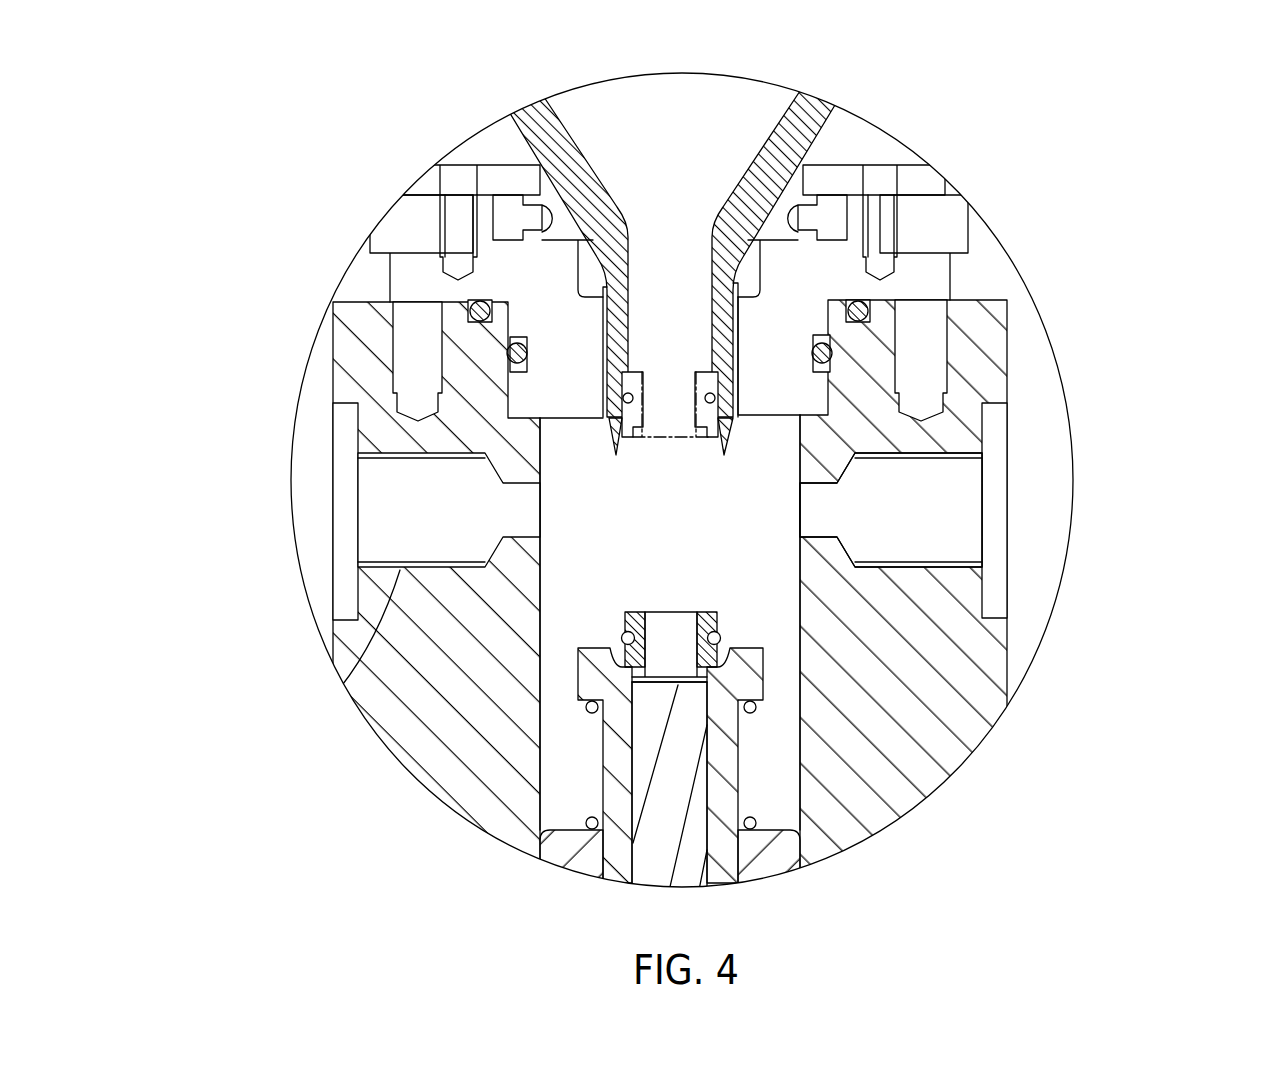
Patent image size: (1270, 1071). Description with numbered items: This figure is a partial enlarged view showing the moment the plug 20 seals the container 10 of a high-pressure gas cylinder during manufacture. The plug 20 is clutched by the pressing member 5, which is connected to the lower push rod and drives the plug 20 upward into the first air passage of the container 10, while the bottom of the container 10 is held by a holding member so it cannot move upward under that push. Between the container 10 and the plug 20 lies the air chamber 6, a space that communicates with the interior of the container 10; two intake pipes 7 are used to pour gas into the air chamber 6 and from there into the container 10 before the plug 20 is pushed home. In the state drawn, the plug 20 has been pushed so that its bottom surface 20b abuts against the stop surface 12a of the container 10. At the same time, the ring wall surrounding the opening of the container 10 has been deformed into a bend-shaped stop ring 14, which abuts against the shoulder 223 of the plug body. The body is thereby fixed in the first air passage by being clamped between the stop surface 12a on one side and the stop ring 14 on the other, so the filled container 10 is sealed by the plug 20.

The container 10 is at (512, 140).
The bottom surface 20b is at (740, 317).
The plug 20 is at (743, 367).
The intake pipes 7 is at (920, 453).
The stop surface 12a is at (625, 392).
The shoulder 223 is at (727, 450).
The stop ring 14 is at (713, 440).
The pressing member 5 is at (763, 670).
The air chamber 6 is at (590, 573).